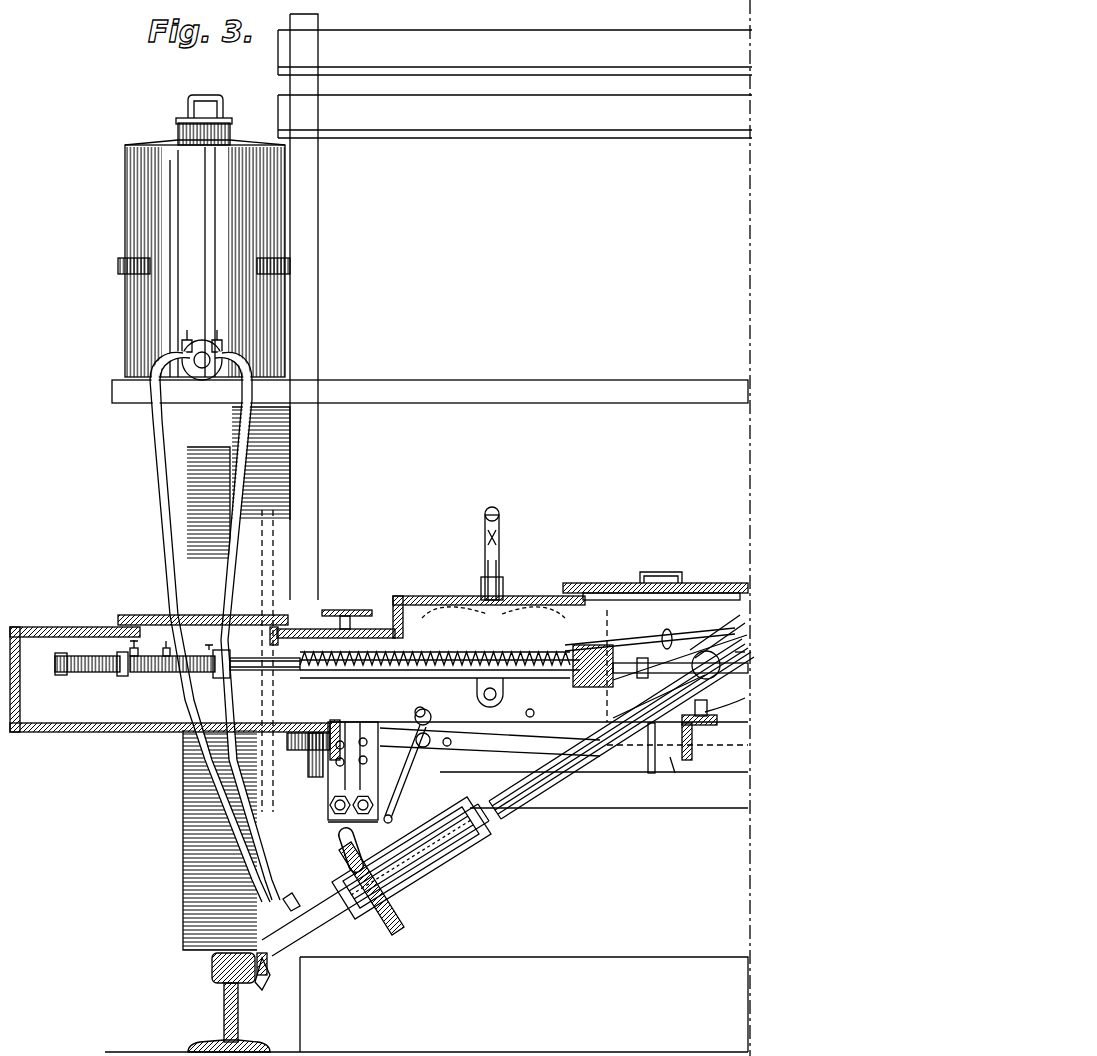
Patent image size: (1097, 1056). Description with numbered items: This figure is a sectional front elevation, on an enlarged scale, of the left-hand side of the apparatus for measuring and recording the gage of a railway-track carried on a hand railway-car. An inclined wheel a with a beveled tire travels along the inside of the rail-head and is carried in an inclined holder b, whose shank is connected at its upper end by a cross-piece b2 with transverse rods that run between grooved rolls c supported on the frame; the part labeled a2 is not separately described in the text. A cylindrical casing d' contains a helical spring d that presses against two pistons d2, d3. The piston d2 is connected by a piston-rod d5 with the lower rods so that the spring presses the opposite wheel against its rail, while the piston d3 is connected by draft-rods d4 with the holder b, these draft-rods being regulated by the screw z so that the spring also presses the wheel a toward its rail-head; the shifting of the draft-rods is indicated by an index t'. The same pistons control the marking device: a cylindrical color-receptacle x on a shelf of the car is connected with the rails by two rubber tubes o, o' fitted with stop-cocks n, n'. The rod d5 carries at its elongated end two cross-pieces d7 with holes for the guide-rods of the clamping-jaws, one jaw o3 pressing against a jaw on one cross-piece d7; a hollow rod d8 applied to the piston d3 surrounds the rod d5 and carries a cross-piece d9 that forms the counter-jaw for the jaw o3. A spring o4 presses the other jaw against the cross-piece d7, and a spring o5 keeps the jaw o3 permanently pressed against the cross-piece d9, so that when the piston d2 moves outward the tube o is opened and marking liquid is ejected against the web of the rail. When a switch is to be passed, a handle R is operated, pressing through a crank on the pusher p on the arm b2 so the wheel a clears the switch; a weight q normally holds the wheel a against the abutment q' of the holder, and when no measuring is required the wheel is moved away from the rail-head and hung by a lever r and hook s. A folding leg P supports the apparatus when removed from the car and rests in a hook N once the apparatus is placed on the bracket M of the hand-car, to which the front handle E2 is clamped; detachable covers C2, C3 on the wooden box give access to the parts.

The cylindrical color-receptacle x is at (204, 236).
The stop-cock n is at (195, 344).
The stop-cock n' is at (213, 329).
The rubber tube o is at (204, 627).
The rubber tube o' is at (236, 626).
The clamping-jaw o3 is at (232, 670).
The spring o4 is at (80, 675).
The spring o5 is at (148, 656).
The detachable cover C3 is at (122, 616).
The detachable cover C2 is at (722, 583).
The helical spring d is at (440, 642).
The cylindrical casing d' is at (471, 692).
The piston d2 is at (579, 680).
The piston d3 is at (308, 676).
The draft-rod d4 is at (636, 645).
The piston-rod d5 is at (588, 652).
The cross-piece d7 is at (135, 676).
The hollow rod d8 is at (285, 652).
The cross-piece d9 is at (218, 678).
The handle R is at (500, 513).
The screw z is at (667, 639).
The index t' is at (680, 664).
The pusher p is at (712, 650).
The cross-piece b2 is at (745, 654).
The weight q is at (738, 693).
The abutment q' is at (714, 680).
The lever r is at (475, 701).
The hook N is at (682, 739).
The inclined holder b is at (547, 785).
The front handle E2 is at (262, 745).
The bracket M is at (312, 768).
The hook s is at (425, 812).
The folding leg P is at (490, 732).
The grooved roll c is at (396, 917).
The inclined wheel a is at (322, 928).
The rail a2 is at (222, 1006).